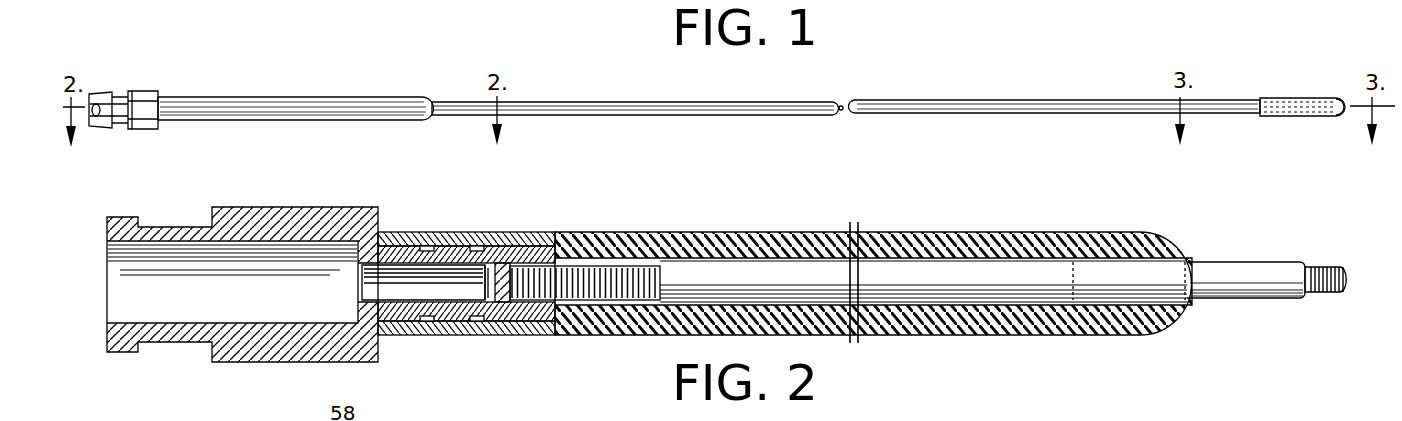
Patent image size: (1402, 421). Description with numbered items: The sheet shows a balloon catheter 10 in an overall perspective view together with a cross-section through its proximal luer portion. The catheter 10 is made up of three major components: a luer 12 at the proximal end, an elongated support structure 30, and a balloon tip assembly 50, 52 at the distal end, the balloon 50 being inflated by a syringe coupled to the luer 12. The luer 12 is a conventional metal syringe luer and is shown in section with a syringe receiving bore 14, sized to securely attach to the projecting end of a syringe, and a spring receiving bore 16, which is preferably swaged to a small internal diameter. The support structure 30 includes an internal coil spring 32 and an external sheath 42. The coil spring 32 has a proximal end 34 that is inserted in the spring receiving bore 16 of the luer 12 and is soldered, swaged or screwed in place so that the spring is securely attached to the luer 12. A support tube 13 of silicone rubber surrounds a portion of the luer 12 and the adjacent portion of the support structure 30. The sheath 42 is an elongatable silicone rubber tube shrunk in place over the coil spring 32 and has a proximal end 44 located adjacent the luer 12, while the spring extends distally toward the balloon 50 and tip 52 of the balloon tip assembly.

In FIG. 1, the balloon catheter 10 is at (945, 85).
In FIG. 1, the luer 12 is at (146, 90).
In FIG. 2, the luer 12 is at (272, 222).
In FIG. 2, the support tube 13 is at (775, 232).
In FIG. 2, the syringe receiving bore 14 is at (336, 258).
In FIG. 2, the spring receiving bore 16 is at (509, 258).
In FIG. 1, the support structure 30 is at (593, 104).
In FIG. 2, the support structure 30 is at (1234, 244).
In FIG. 2, the coil spring 32 is at (1318, 268).
In FIG. 2, the proximal end 34 is at (548, 322).
In FIG. 2, the sheath 42 is at (1262, 300).
In FIG. 2, the proximal end 44 is at (600, 312).
In FIG. 1, the balloon 50 is at (1272, 100).
In FIG. 1, the balloon tip assembly 52 is at (1338, 100).